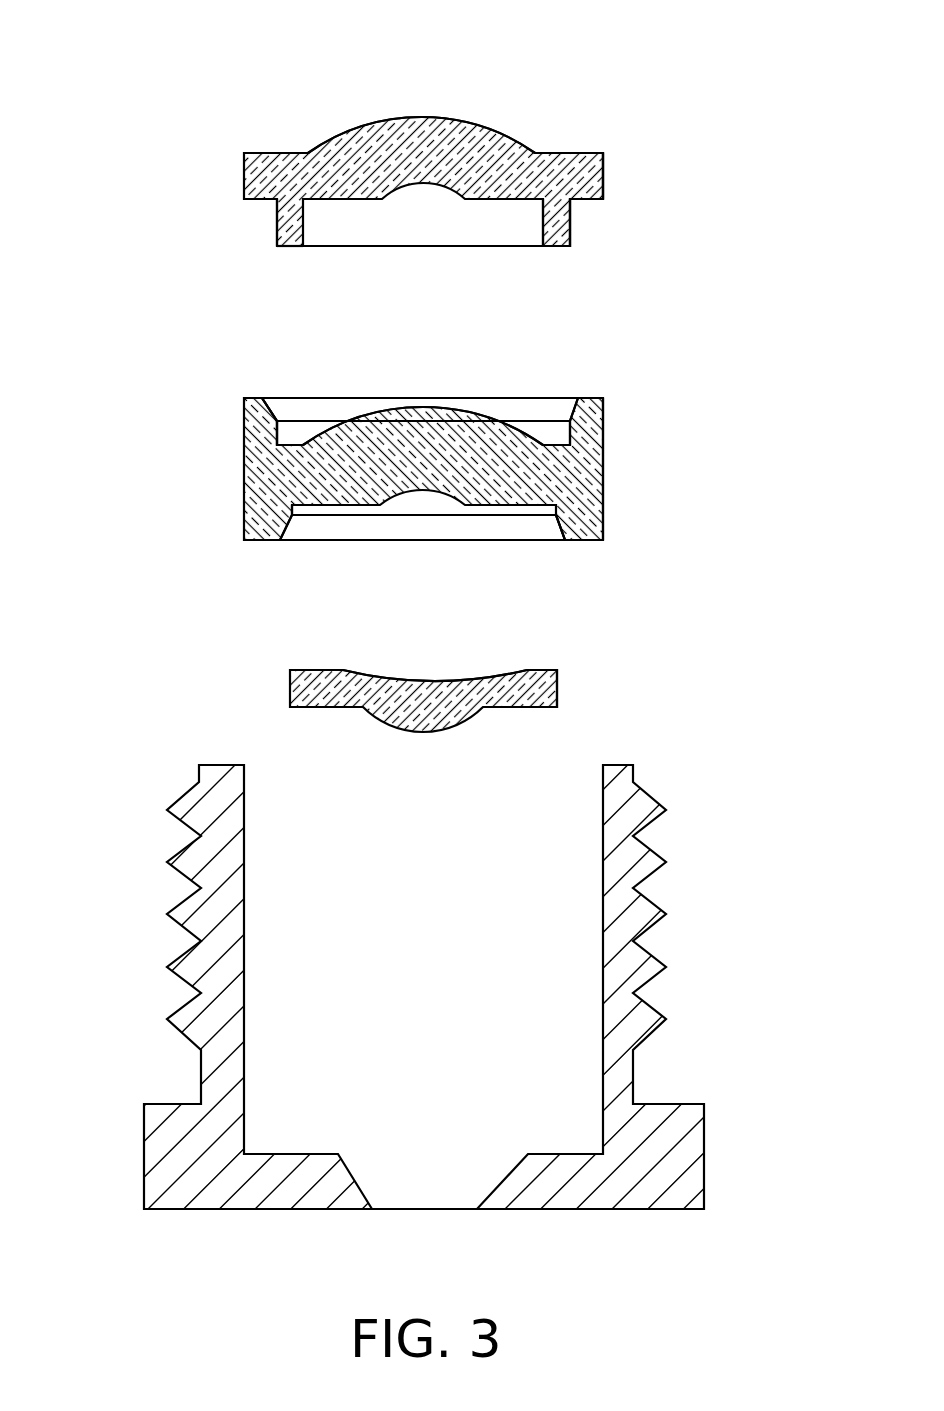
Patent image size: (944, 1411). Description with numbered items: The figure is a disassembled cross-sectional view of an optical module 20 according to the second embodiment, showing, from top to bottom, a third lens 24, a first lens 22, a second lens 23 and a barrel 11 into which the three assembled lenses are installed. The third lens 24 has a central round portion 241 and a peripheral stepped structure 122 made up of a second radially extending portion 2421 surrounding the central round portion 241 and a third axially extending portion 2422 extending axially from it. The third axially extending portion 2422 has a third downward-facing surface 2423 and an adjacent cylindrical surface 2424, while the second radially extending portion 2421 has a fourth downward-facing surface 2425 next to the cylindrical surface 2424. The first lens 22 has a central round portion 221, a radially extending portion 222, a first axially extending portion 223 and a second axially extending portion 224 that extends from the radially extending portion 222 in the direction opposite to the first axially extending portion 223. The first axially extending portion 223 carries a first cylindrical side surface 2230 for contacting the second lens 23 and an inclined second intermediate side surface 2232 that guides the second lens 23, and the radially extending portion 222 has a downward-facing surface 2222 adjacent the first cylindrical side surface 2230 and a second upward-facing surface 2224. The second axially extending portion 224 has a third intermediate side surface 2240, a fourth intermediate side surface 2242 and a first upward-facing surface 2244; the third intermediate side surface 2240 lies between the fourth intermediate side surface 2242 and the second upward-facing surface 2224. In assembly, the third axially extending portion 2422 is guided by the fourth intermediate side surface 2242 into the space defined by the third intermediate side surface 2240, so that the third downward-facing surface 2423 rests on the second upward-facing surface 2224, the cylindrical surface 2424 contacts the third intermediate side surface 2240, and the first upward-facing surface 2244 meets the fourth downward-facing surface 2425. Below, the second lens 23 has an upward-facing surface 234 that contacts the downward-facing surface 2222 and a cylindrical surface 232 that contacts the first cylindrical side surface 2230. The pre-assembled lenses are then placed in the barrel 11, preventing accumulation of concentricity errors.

The optical module 20 is at (449, 40).
The third lens 24 is at (280, 128).
The central round portion 241 is at (453, 120).
The second radially extending portion 2421 is at (582, 153).
The third axially extending portion 2422 is at (563, 233).
The stepped portion 122 is at (731, 117).
The fourth downward-facing surface 2425 is at (255, 205).
The cylindrical surface 2424 is at (268, 232).
The third downward-facing surface 2423 is at (298, 258).
The first lens 22 is at (625, 471).
The first upward-facing surface 2244 is at (248, 390).
The fourth intermediate side surface 2242 is at (279, 400).
The third intermediate side surface 2240 is at (295, 423).
The central round portion 221 is at (452, 428).
The second upward-facing surface 2224 is at (555, 430).
The second axially extending portion 224 is at (578, 425).
The radially extending portion 222 is at (542, 478).
The first axially extending portion 223 is at (585, 517).
The downward-facing surface 2222 is at (324, 513).
The first cylindrical side surface 2230 is at (545, 512).
The second inclined intermediate side surface 2232 is at (555, 530).
The second lens 23 is at (545, 652).
The upward-facing surface 234 is at (323, 658).
The cylindrical surface 232 is at (572, 690).
The barrel 11 is at (636, 1139).